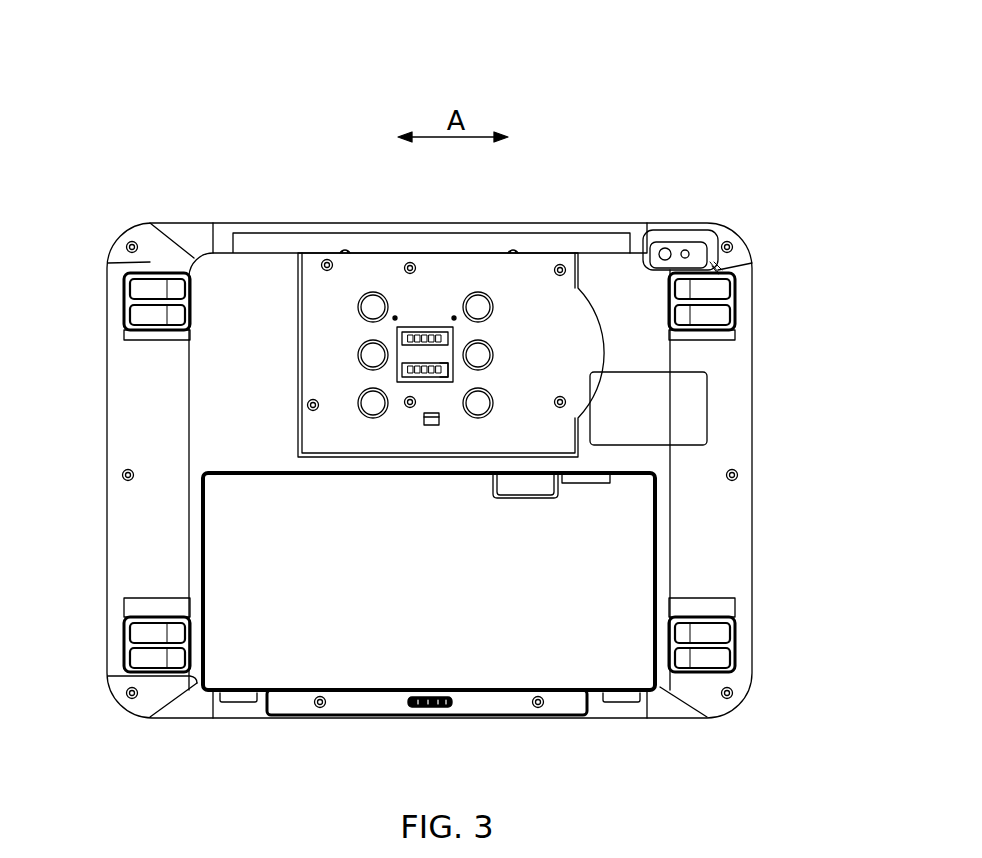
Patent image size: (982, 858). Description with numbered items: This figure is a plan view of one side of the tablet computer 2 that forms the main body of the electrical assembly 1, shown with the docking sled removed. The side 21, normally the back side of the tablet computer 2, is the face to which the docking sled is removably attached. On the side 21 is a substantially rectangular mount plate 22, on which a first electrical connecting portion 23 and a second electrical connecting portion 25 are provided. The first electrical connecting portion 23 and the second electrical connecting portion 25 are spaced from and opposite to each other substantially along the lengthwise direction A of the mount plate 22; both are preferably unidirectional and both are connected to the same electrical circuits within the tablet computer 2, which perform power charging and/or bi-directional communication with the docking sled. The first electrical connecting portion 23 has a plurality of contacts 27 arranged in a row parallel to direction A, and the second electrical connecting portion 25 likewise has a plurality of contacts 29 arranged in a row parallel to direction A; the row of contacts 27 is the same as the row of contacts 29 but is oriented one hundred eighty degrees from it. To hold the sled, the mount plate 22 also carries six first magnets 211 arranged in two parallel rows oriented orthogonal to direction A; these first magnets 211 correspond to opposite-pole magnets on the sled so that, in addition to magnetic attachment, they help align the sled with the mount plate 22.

The assembly 1 is at (758, 120).
The tablet computer 2 is at (743, 402).
The side 21 is at (218, 383).
The first magnets 211 is at (372, 403).
The mount plate 22 is at (535, 293).
The first electrical connecting portion 23 is at (447, 332).
The second electrical connecting portion 25 is at (448, 365).
The contacts 27 is at (409, 333).
The contacts 29 is at (403, 365).